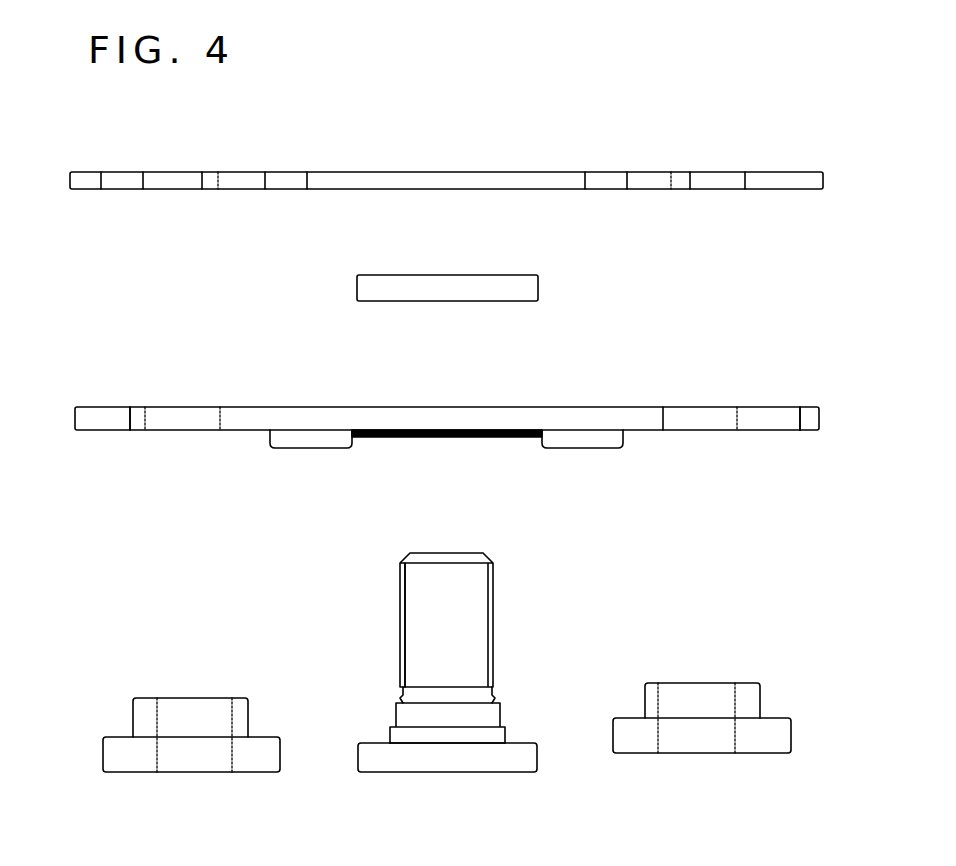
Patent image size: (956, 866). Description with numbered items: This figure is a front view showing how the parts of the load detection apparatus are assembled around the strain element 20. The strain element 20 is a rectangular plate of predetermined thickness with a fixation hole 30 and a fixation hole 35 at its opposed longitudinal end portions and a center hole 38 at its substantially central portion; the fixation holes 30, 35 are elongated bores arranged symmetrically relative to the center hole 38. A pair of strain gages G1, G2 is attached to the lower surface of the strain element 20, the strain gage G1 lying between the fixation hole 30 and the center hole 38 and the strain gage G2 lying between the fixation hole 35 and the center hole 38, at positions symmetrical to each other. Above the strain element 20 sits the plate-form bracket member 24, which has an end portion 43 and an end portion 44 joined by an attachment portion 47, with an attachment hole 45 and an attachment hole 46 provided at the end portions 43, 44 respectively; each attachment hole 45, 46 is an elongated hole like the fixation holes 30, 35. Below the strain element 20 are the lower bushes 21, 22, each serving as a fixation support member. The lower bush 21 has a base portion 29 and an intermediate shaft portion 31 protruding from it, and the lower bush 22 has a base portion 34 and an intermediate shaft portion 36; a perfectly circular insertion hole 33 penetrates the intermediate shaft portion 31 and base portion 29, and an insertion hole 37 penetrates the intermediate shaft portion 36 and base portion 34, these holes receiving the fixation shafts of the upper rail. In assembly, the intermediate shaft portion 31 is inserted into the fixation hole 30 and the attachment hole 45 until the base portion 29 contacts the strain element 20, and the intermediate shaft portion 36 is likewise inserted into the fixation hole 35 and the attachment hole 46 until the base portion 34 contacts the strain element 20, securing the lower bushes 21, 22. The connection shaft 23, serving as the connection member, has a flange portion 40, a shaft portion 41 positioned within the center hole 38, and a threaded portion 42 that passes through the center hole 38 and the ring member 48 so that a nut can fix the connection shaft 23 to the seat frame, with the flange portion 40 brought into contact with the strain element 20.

The strain element 20 is at (423, 459).
The lower bush 21 is at (165, 760).
The lower bush 22 is at (727, 740).
The connection shaft 23 is at (430, 772).
The bracket member 24 is at (425, 148).
The base portion 29 is at (161, 762).
The fixation hole 30 is at (190, 432).
The intermediate shaft portion 31 is at (145, 725).
The insertion hole 33 is at (185, 770).
The base portion 34 is at (732, 750).
The fixation hole 35 is at (708, 430).
The intermediate shaft portion 36 is at (737, 703).
The insertion hole 37 is at (703, 753).
The center hole 38 is at (428, 437).
The flange portion 40 is at (495, 757).
The shaft portion 41 is at (440, 668).
The threaded portion 42 is at (418, 693).
The end portion 43 is at (103, 183).
The end portion 44 is at (795, 180).
The attachment hole 45 is at (183, 172).
The attachment hole 46 is at (712, 170).
The attachment portion 47 is at (470, 172).
The ring member 48 is at (357, 290).
The strain gage G1 is at (303, 450).
The strain gage G2 is at (598, 450).